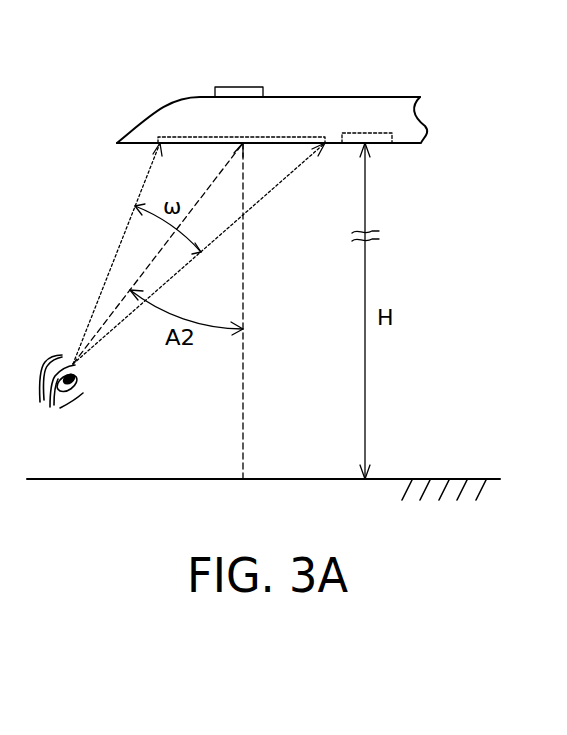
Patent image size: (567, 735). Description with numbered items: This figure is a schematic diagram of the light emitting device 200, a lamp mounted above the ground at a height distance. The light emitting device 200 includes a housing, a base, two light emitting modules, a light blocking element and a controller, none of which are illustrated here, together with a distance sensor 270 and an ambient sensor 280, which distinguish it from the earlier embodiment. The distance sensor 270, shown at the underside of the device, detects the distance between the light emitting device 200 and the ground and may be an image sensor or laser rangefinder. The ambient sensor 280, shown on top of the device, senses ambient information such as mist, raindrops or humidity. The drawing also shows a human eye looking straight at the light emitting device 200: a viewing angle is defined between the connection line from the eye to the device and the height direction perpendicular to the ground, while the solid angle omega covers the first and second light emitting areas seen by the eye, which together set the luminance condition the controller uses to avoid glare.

The light emitting device 200 is at (130, 82).
The ambient sensor 280 is at (238, 91).
The distance sensor 270 is at (382, 141).